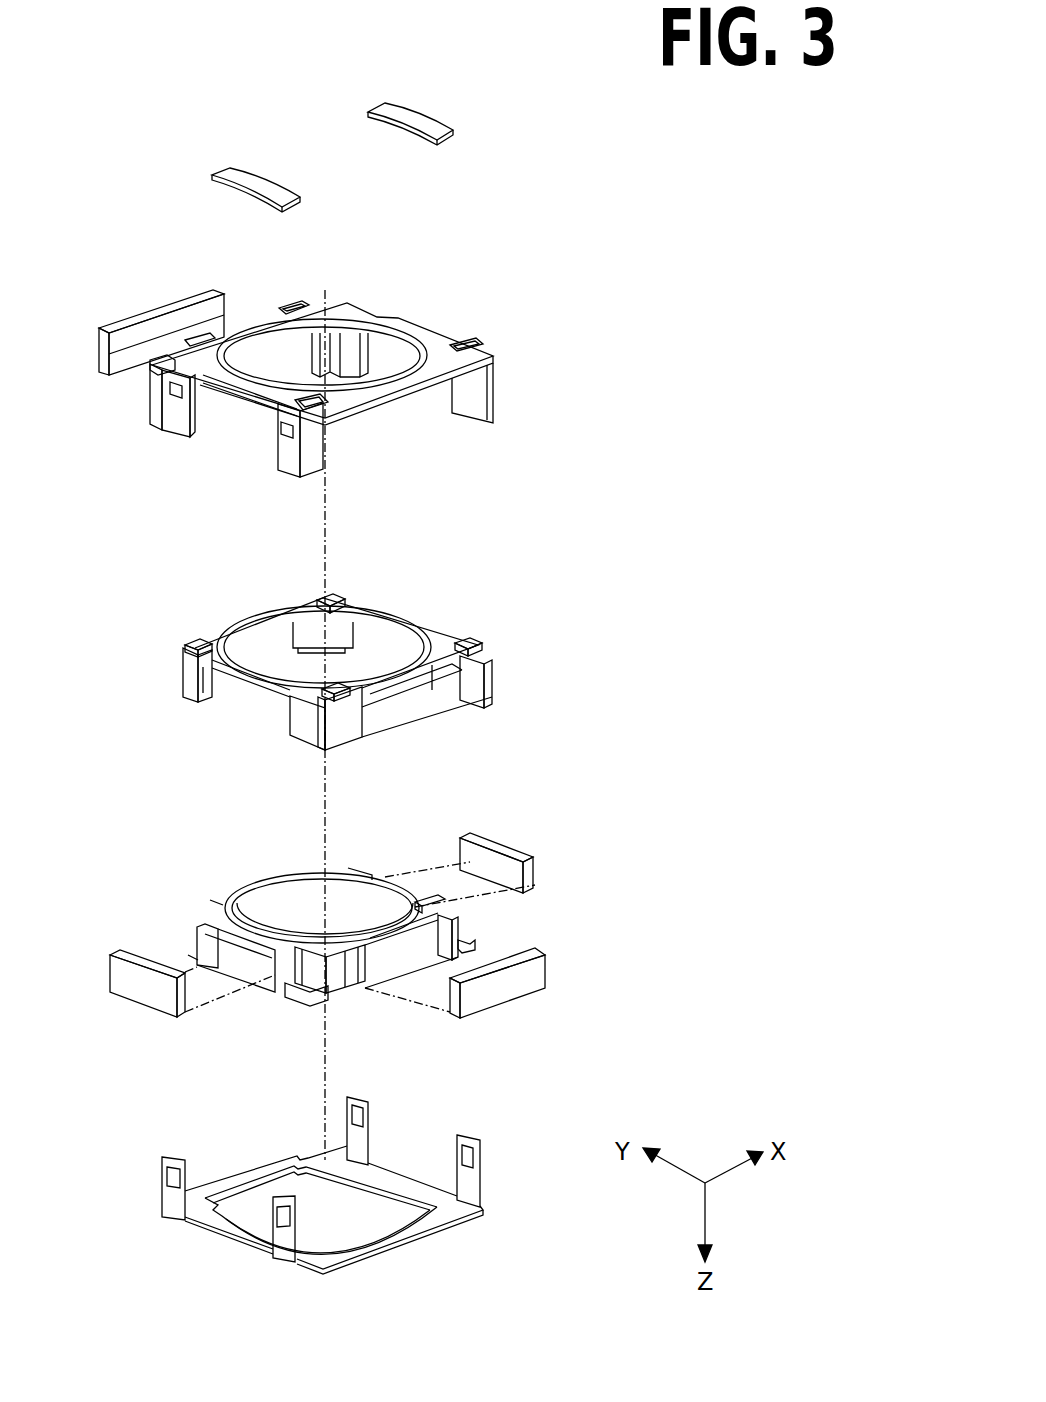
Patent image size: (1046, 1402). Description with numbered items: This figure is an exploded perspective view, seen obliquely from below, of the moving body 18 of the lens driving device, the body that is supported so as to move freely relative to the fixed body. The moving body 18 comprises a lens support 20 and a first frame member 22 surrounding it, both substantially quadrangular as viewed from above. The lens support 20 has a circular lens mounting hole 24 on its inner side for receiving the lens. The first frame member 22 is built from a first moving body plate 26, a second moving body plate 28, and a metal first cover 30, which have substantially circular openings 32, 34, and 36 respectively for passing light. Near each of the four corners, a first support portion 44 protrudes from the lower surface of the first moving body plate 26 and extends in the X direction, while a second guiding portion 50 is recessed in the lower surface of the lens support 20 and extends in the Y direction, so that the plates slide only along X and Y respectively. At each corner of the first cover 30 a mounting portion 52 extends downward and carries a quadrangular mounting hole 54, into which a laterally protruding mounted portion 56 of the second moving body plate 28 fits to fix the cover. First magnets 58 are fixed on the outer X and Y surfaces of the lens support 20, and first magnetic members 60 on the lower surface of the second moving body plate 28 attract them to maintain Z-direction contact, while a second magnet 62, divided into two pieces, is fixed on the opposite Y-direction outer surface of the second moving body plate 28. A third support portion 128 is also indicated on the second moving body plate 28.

The moving body 18 is at (580, 558).
The lens support 20 is at (290, 872).
The first frame member 22 is at (456, 1236).
The lens mounting hole 24 is at (245, 905).
The first moving body plate 26 is at (253, 700).
The second moving body plate 28 is at (400, 395).
The first cover 30 is at (212, 1226).
The opening 32 is at (272, 606).
The opening 34 is at (400, 332).
The opening 36 is at (385, 1180).
The first support portion 44 is at (330, 594).
The second guiding portion 50 is at (466, 942).
The mounting portion 52 is at (348, 1140).
The mounting hole 54 is at (356, 1110).
The mounted portion 56 is at (166, 390).
The first magnet 58 is at (500, 855).
The first magnetic member 60 is at (406, 114).
The second magnet 62 is at (156, 316).
The third support portion 128 is at (148, 368).